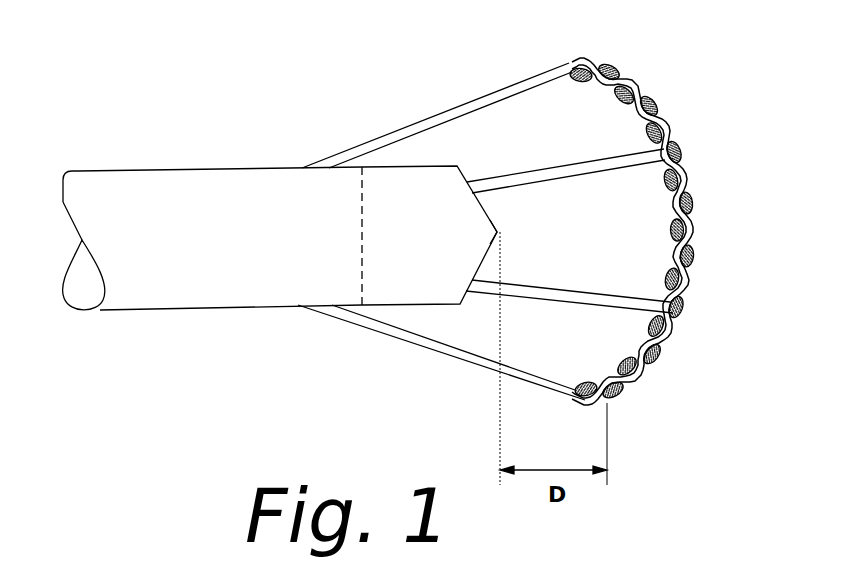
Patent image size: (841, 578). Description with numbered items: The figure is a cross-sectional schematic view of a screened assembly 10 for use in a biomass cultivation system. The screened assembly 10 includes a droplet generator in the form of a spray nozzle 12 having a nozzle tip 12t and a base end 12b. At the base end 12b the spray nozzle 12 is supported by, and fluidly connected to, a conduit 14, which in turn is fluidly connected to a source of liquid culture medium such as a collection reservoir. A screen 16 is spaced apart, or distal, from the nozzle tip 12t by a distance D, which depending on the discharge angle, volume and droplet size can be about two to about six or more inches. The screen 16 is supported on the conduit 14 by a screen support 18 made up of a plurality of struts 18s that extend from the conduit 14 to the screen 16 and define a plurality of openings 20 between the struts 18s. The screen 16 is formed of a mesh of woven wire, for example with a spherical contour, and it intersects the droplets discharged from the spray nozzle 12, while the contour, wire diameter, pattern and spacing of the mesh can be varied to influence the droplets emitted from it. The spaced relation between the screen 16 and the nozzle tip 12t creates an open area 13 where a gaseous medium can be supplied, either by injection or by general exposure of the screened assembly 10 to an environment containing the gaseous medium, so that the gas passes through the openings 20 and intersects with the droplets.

The screened assembly 10 is at (290, 101).
The spray nozzle 12 is at (443, 244).
The base end 12b is at (362, 246).
The nozzle tip 12t is at (497, 232).
The open area 13 is at (465, 330).
The conduit 14 is at (268, 249).
The screen 16 is at (645, 388).
The screen support 18 is at (395, 118).
The struts 18s is at (525, 78).
The openings 20 is at (598, 124).